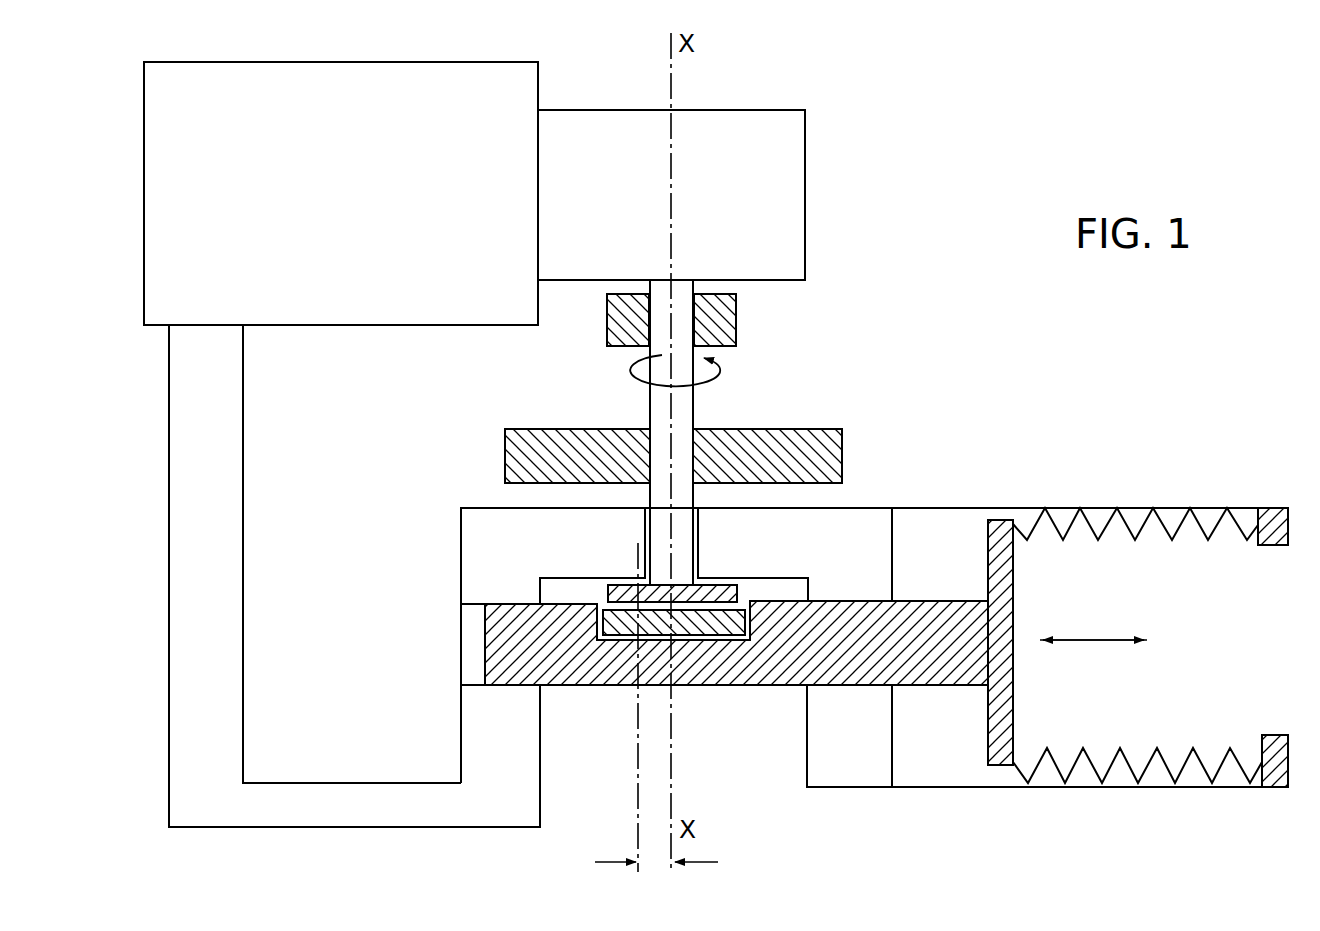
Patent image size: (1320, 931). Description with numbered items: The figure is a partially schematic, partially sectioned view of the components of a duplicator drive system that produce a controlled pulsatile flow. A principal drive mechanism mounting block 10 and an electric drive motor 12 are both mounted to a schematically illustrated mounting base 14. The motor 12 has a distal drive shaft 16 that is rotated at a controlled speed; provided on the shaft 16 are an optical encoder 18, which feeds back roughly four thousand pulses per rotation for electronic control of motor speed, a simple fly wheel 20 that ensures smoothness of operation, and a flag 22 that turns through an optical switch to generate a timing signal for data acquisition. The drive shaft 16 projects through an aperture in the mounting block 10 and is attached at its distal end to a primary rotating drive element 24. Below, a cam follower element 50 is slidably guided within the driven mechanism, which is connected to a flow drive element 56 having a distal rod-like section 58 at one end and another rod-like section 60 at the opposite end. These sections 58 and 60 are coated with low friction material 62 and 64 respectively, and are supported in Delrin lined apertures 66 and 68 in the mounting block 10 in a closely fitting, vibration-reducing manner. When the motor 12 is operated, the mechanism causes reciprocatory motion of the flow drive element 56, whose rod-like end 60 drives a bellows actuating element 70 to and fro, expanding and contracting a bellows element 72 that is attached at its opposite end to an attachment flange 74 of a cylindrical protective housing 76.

The drive mechanism mounting block 10 is at (461, 546).
The electric drive motor 12 is at (805, 170).
The mounting base 14 is at (243, 750).
The drive shaft 16 is at (694, 410).
The optical encoder 18 is at (736, 321).
The fly wheel 20 is at (842, 430).
The flag 22 is at (647, 392).
The primary rotating drive element 24 is at (737, 592).
The cam follower element 50 is at (618, 633).
The flow drive element 56 is at (753, 685).
The rod-like section 58 is at (485, 630).
The rod-like section 60 is at (982, 685).
The low friction coating 62 is at (567, 602).
The low friction coating 64 is at (925, 600).
The Delrin lined aperture 66 is at (470, 685).
The Delrin lined aperture 68 is at (802, 685).
The bellows actuating element 70 is at (985, 538).
The bellows element 72 is at (1157, 753).
The attachment flange 74 is at (1265, 545).
The cylindrical protective housing 76 is at (1220, 504).